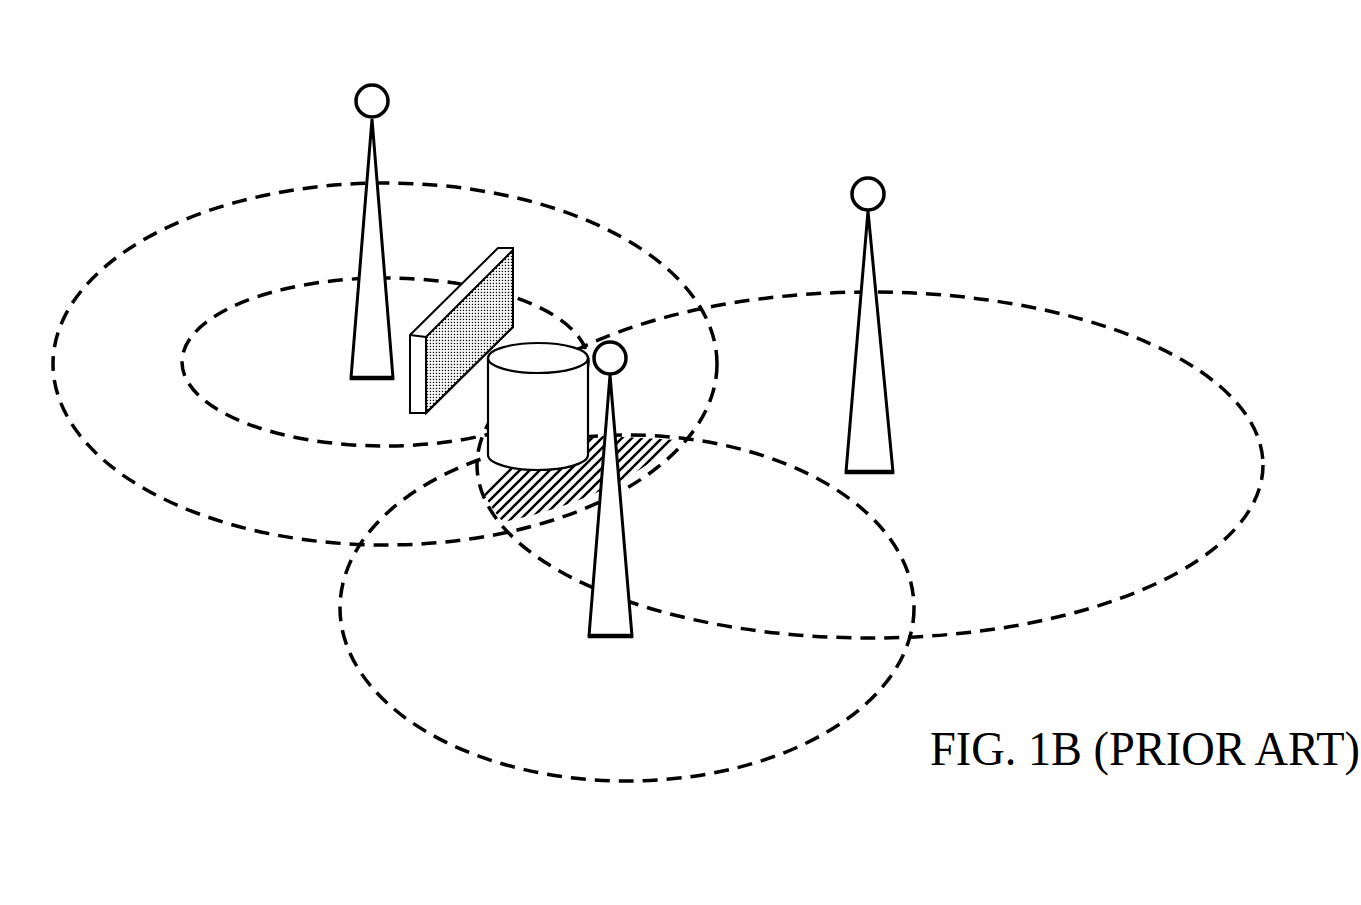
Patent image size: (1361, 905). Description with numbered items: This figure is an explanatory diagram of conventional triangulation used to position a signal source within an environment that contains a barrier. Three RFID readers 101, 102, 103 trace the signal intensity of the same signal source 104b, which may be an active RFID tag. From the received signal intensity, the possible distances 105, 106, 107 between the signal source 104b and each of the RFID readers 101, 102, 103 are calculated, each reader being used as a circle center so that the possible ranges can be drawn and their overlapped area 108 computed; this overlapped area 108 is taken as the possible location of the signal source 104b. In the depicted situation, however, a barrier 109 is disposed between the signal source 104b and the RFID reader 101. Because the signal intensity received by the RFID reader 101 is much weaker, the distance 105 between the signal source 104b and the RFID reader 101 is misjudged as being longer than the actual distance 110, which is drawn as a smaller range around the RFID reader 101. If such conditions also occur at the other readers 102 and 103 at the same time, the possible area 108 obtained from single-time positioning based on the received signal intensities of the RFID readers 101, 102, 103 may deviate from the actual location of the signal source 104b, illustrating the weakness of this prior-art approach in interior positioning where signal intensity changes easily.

The RFID reader 101 is at (355, 102).
The RFID reader 102 is at (618, 341).
The RFID reader 103 is at (856, 183).
The signal source 104b is at (538, 406).
The distance 105 is at (350, 377).
The distance 106 is at (588, 636).
The distance 107 is at (1250, 472).
The overlapped area 108 is at (647, 472).
The barrier 109 is at (506, 248).
The actual distance 110 is at (376, 390).